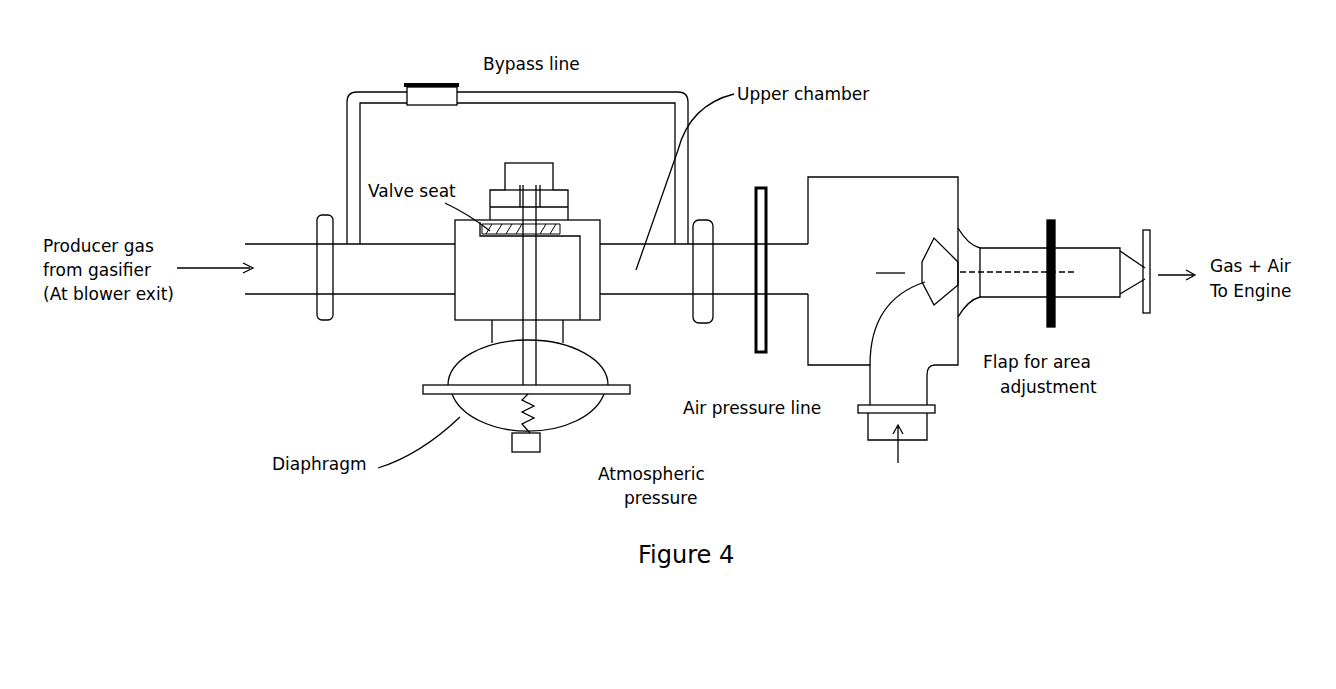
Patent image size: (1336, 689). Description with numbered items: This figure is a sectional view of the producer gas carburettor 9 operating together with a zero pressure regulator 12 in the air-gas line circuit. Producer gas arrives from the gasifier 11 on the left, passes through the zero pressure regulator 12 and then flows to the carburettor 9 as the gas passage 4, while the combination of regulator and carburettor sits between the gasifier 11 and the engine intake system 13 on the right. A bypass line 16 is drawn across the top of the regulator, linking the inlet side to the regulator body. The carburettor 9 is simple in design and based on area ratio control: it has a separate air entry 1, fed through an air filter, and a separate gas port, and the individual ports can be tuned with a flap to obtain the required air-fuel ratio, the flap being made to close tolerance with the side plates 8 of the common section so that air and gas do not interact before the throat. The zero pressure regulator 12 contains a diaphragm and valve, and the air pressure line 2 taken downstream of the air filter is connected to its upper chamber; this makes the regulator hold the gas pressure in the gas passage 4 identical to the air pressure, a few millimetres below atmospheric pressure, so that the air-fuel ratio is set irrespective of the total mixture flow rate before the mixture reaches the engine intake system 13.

The air entry 1 is at (945, 447).
The air passage 2 is at (892, 390).
The gas passage 4 is at (590, 424).
The side plates 8 is at (1045, 290).
The carburettor 9 is at (865, 178).
The gasifier 11 is at (268, 262).
The zero pressure regulator 12 is at (528, 163).
The engine intake system 13 is at (1137, 267).
The bypass line relief 16 is at (433, 86).